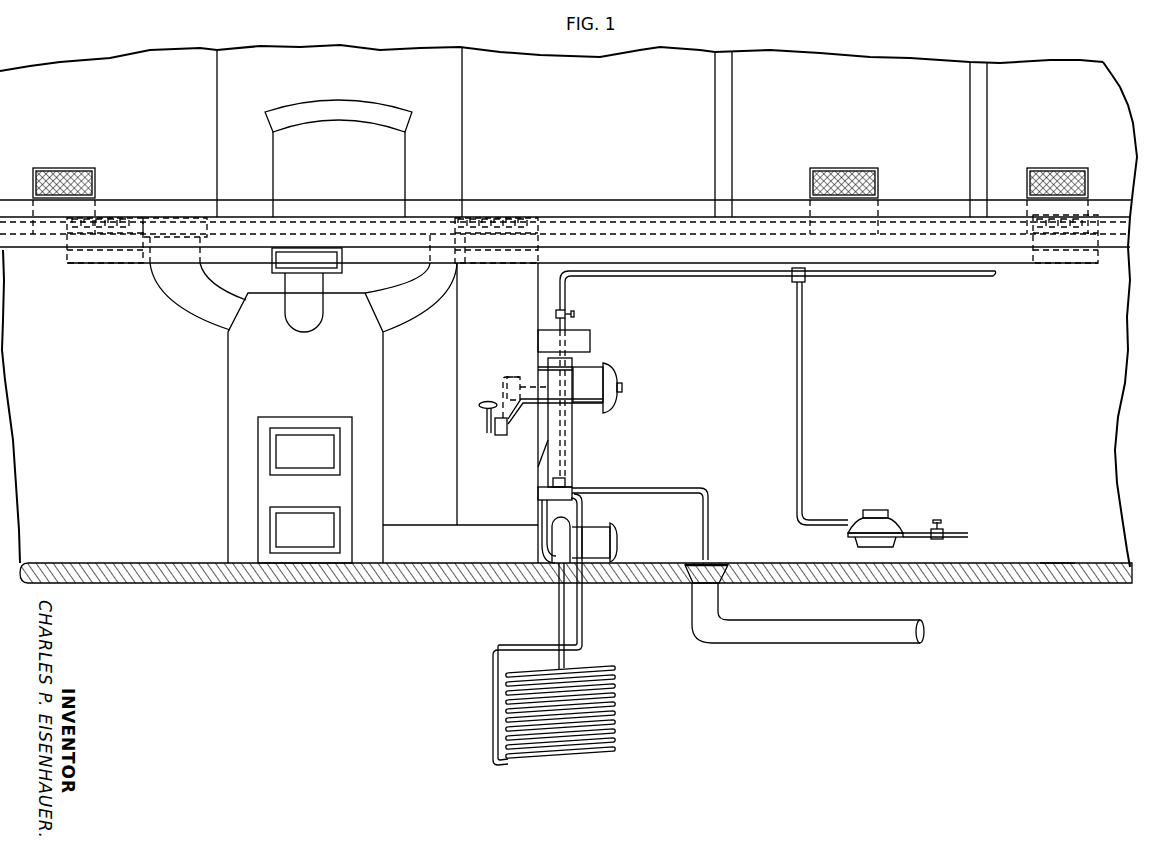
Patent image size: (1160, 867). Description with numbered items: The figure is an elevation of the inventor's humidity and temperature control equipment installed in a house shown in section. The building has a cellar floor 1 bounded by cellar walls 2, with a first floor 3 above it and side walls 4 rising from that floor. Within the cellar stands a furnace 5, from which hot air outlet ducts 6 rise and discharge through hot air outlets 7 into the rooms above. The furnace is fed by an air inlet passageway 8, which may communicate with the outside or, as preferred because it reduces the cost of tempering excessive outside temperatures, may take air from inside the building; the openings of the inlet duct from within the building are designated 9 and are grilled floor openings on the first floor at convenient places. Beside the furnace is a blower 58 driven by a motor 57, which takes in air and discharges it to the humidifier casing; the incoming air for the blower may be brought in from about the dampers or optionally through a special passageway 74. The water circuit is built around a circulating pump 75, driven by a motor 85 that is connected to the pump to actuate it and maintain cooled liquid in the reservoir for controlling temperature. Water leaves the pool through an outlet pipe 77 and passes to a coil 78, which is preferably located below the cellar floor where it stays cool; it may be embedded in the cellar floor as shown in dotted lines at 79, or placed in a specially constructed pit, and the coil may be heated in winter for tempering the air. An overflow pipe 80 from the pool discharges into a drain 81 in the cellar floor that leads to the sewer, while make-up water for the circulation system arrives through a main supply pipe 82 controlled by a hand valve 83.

The cellar floor 1 is at (1075, 586).
The cellar walls 2 is at (1100, 355).
The first floor 3 is at (1115, 239).
The side walls 4 is at (1027, 73).
The furnace 5 is at (235, 393).
The hot air outlet ducts 6 is at (198, 298).
The hot air outlets 7 is at (98, 174).
The air inlet passageway 8 is at (458, 497).
The opening of the inlet duct 9 is at (133, 262).
The motor 57 is at (612, 378).
The blower 58 is at (576, 363).
The special passageway 74 is at (590, 342).
The circulating pump 75 is at (556, 540).
The outlet pipe 77 is at (584, 627).
The coil 78 is at (614, 729).
The embedded coil location 79 is at (1057, 566).
The overflow pipe 80 is at (706, 491).
The drain 81 is at (847, 650).
The main supply pipe 82 is at (803, 420).
The hand valve 83 is at (570, 313).
The motor 85 is at (611, 528).